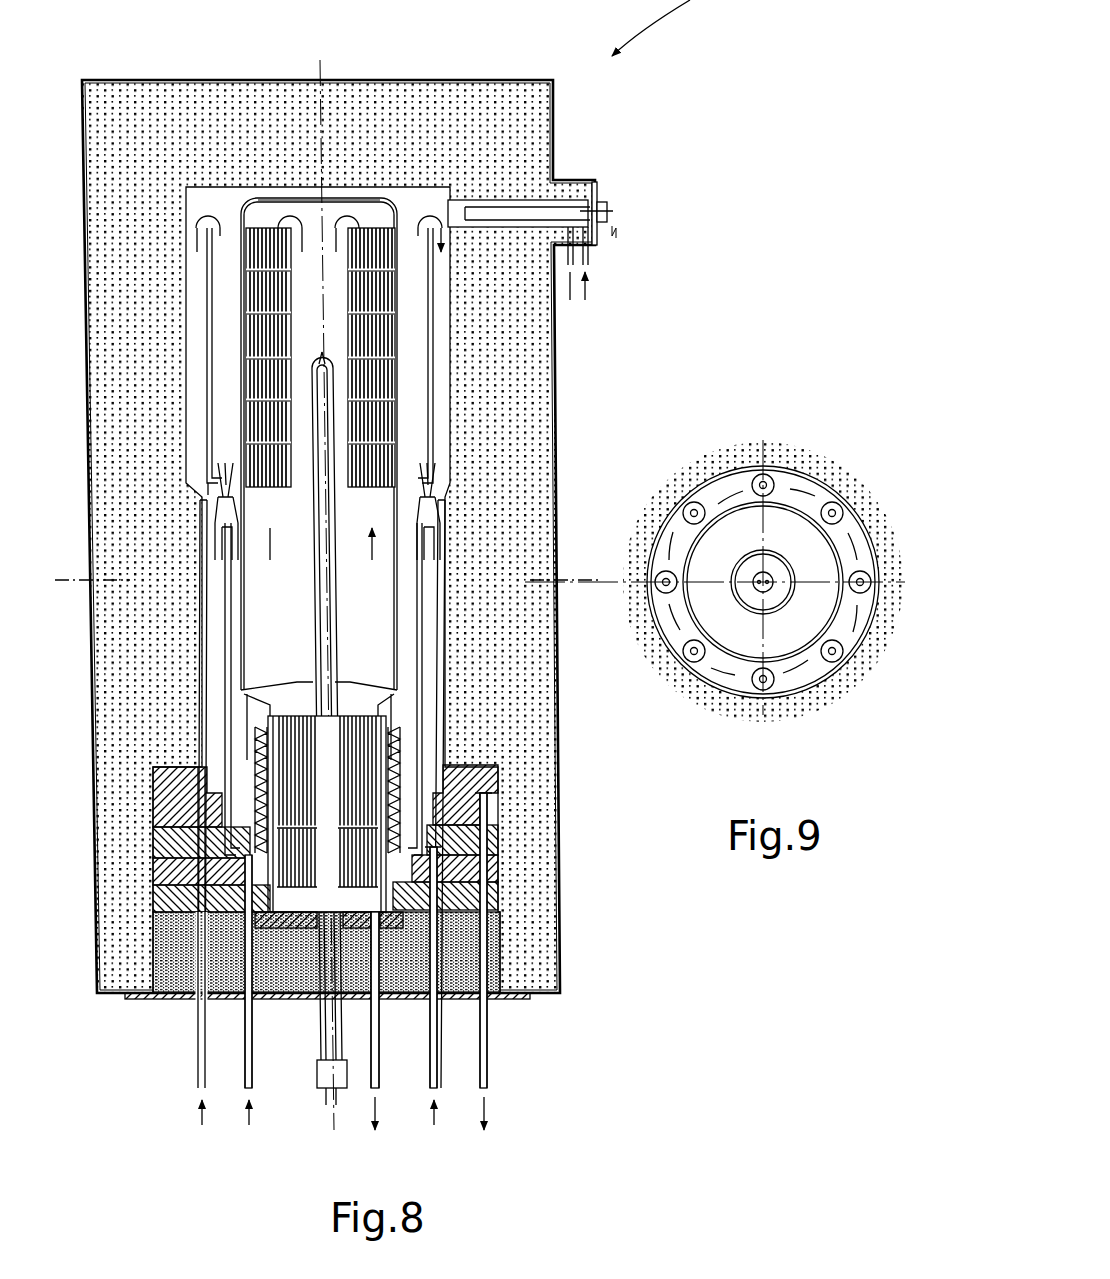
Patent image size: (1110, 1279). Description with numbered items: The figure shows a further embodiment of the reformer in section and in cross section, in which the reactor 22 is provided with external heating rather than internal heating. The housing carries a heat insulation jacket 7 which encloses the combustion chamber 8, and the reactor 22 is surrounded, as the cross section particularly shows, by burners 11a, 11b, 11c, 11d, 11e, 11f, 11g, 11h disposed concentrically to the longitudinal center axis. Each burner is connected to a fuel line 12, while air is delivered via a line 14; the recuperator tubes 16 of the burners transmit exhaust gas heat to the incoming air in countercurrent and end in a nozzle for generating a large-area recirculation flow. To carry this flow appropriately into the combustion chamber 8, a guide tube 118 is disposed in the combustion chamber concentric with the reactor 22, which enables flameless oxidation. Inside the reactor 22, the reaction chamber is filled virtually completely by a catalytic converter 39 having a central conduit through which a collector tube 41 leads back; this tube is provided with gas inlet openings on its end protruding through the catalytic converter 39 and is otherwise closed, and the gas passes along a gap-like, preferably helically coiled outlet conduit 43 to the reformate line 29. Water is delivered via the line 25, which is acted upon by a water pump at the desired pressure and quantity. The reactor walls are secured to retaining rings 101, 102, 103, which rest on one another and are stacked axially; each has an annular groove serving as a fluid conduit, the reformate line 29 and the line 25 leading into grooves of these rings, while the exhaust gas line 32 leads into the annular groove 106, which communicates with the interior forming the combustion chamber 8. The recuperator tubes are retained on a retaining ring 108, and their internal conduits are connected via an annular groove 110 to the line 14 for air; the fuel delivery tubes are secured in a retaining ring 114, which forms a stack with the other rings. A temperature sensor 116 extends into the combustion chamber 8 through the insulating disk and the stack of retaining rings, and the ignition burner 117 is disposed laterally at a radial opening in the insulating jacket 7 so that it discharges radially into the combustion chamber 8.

In FIG. 8, the heat insulation jacket 7 is at (515, 146).
In FIG. 8, the combustion chamber 8 is at (446, 390).
In FIG. 9, the burner 11a is at (868, 570).
In FIG. 9, the burner 11b is at (836, 655).
In FIG. 9, the burner 11c is at (768, 686).
In FIG. 9, the burner 11d is at (698, 655).
In FIG. 9, the burner 11e is at (664, 584).
In FIG. 9, the burner 11f is at (692, 512).
In FIG. 9, the burner 11g is at (760, 478).
In FIG. 9, the burner 11h is at (830, 507).
In FIG. 8, the fuel line 12 is at (440, 1060).
In FIG. 8, the line 14 is at (200, 1065).
In FIG. 8, the recuperator tube 16 is at (441, 512).
In FIG. 8, the reactor 22 is at (404, 204).
In FIG. 9, the reactor 22 is at (736, 660).
In FIG. 8, the line 25 is at (247, 1065).
In FIG. 8, the reformate line 29 is at (378, 1060).
In FIG. 8, the exhaust gas line 32 is at (487, 1045).
In FIG. 8, the catalytic converter 39 is at (372, 421).
In FIG. 8, the collector tube 41 is at (292, 575).
In FIG. 8, the outlet conduit 43 is at (404, 742).
In FIG. 8, the retaining ring 101 is at (503, 906).
In FIG. 8, the retaining ring 102 is at (505, 872).
In FIG. 8, the retaining ring 103 is at (500, 776).
In FIG. 8, the annular groove 106 is at (152, 790).
In FIG. 8, the retaining ring 108 is at (503, 806).
In FIG. 8, the annular groove 110 is at (152, 826).
In FIG. 8, the retaining ring 114 is at (500, 842).
In FIG. 8, the temperature sensor 116 is at (330, 1030).
In FIG. 8, the ignition burner 117 is at (616, 178).
In FIG. 8, the guide tube 118 is at (432, 326).